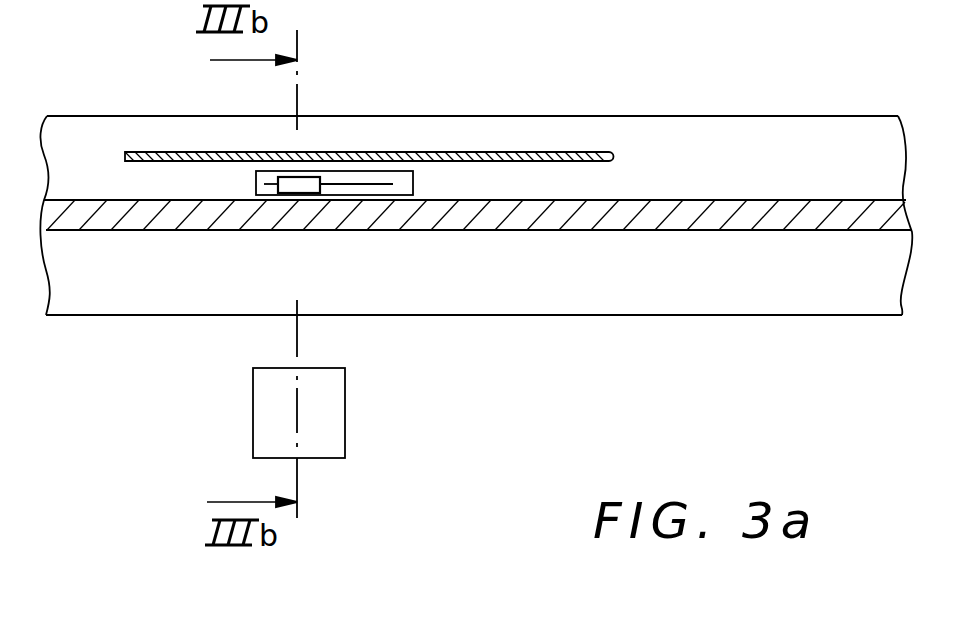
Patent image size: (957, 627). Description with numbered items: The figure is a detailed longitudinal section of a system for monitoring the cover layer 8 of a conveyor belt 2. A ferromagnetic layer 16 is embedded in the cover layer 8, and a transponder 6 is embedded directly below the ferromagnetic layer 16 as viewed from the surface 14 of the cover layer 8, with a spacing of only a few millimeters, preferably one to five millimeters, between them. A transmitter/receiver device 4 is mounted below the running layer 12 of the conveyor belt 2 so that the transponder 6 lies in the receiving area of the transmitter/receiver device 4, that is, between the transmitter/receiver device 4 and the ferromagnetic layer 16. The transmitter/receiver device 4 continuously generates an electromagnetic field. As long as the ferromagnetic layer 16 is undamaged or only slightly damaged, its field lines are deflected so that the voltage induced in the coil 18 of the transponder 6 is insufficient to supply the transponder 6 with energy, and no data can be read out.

The conveyor belt 2 is at (790, 135).
The transmitter/receiver device 4 is at (345, 416).
The transponder 6 is at (399, 187).
The cover layer 8 is at (677, 150).
The running layer 12 is at (682, 277).
The surface 14 is at (477, 116).
The ferromagnetic layer 16 is at (563, 157).
The coil 18 is at (363, 184).